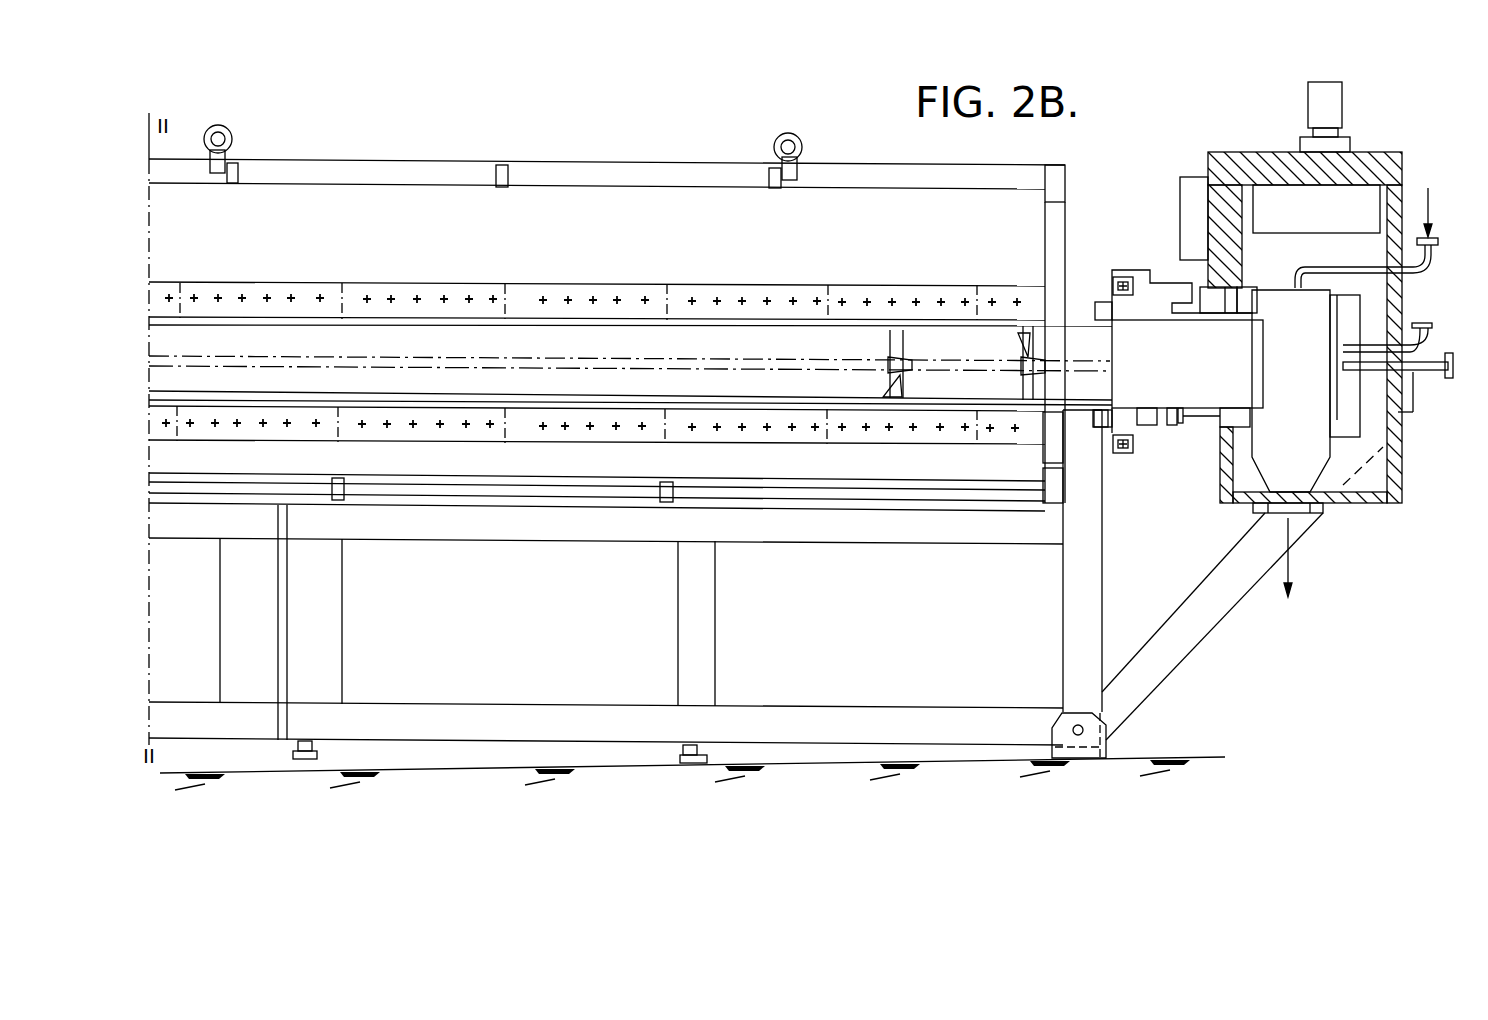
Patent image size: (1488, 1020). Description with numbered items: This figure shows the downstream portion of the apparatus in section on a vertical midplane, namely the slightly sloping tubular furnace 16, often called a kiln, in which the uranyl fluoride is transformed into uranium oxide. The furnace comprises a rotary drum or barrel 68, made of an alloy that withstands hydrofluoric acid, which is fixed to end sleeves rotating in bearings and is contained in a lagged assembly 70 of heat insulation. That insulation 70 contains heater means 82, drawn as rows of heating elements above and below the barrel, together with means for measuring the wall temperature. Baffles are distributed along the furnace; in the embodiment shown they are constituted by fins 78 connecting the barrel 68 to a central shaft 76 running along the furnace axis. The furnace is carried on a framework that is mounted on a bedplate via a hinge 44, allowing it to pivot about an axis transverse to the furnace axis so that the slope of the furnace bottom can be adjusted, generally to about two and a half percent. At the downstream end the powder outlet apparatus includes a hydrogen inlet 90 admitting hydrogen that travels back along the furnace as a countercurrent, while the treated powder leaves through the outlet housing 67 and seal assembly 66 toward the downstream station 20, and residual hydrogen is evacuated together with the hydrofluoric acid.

The tubular furnace 16 is at (574, 425).
The collection station (not shown) 20 is at (1320, 573).
The hinge 44 is at (1097, 750).
The seal and flange assembly 66 is at (1183, 424).
The crucible housing 67 is at (1323, 470).
The rotary barrel 68 is at (531, 401).
The lagged assembly 70 is at (595, 207).
The central shaft 76 is at (958, 362).
The fins 78 is at (1028, 392).
The heater means 82 is at (393, 442).
The hydrogen inlet 90 is at (1422, 268).